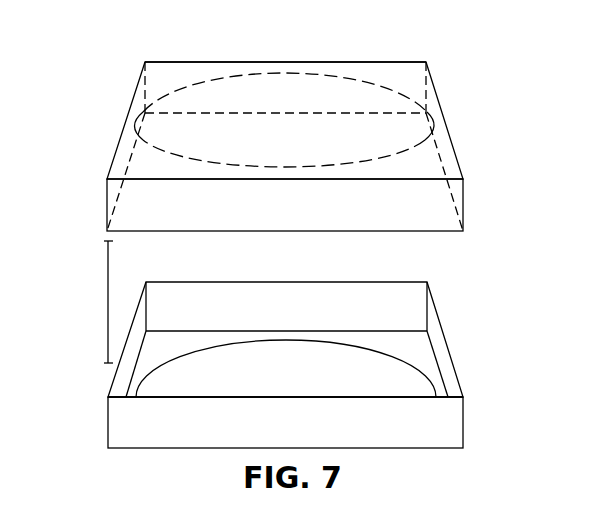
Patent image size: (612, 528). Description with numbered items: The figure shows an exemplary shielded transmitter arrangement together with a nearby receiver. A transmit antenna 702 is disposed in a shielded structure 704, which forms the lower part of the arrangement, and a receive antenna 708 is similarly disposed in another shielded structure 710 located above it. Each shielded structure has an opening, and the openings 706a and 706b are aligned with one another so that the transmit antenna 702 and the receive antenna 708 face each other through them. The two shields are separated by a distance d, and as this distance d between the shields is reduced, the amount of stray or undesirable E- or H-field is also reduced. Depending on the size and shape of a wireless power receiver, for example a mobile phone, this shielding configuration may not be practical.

The transmit antenna 702 is at (410, 360).
The shielded structure 704 is at (106, 395).
The opening 706a is at (401, 295).
The opening 706b is at (424, 231).
The receive antenna 708 is at (401, 90).
The shielded structure 710 is at (144, 60).
The distance between the shields d is at (98, 302).